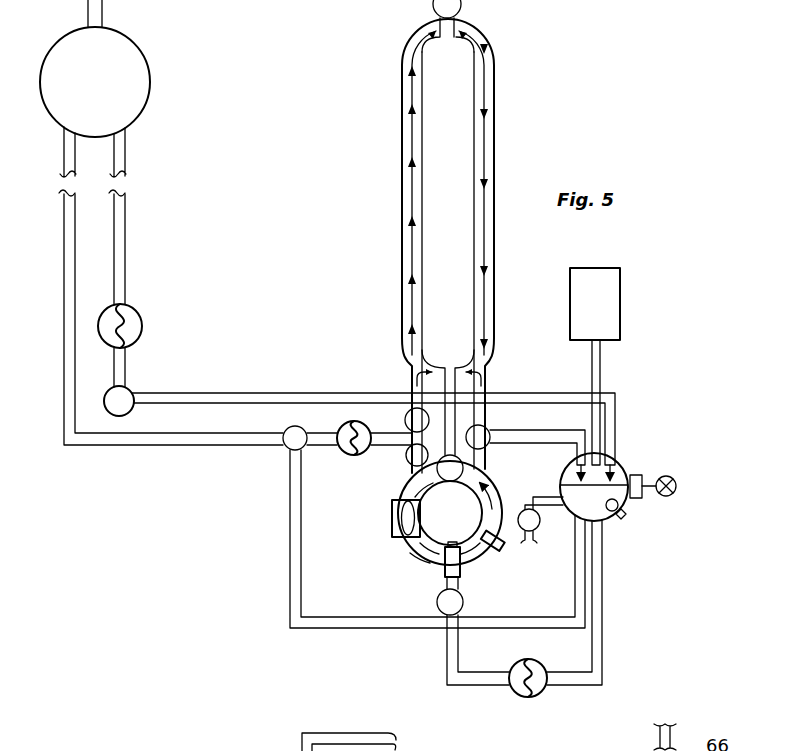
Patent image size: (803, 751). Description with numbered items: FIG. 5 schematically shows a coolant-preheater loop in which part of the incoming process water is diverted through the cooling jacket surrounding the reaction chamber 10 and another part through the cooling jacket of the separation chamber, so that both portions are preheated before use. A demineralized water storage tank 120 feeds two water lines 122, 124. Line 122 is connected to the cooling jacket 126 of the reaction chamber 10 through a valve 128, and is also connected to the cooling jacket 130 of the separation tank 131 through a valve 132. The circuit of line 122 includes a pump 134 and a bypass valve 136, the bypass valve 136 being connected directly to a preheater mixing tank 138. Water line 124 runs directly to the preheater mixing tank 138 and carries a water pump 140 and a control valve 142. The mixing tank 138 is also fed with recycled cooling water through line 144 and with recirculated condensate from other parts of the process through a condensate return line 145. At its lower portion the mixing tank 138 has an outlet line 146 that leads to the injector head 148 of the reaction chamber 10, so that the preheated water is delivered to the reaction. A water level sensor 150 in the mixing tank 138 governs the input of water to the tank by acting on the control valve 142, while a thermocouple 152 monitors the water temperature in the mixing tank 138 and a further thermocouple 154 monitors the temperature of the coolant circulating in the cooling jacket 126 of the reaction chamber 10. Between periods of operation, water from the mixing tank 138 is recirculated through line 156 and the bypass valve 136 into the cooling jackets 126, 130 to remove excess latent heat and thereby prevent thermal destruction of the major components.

The annular reactor 10 is at (486, 566).
The demineralized water storage tank 120 is at (114, 92).
The water line 122 is at (110, 448).
The water line 124 is at (213, 393).
The cooling jacket 126 is at (413, 552).
The valve 128 is at (407, 466).
The cooling jacket 130 is at (402, 193).
The separation tank 131 is at (402, 97).
The valve 132 is at (407, 411).
The pump 134 is at (350, 457).
The bypass valve 136 is at (284, 447).
The preheater mixing tank 138 is at (622, 455).
The water pump 140 is at (137, 311).
The control valve 142 is at (131, 390).
The line 144 is at (553, 444).
The condensate return line 145 is at (600, 382).
The outlet line 146 is at (603, 612).
The injector head 148 is at (448, 563).
The water level sensor 150 is at (640, 500).
The thermocouple 152 is at (622, 517).
The thermocouple 154 is at (504, 546).
The line 156 is at (362, 630).